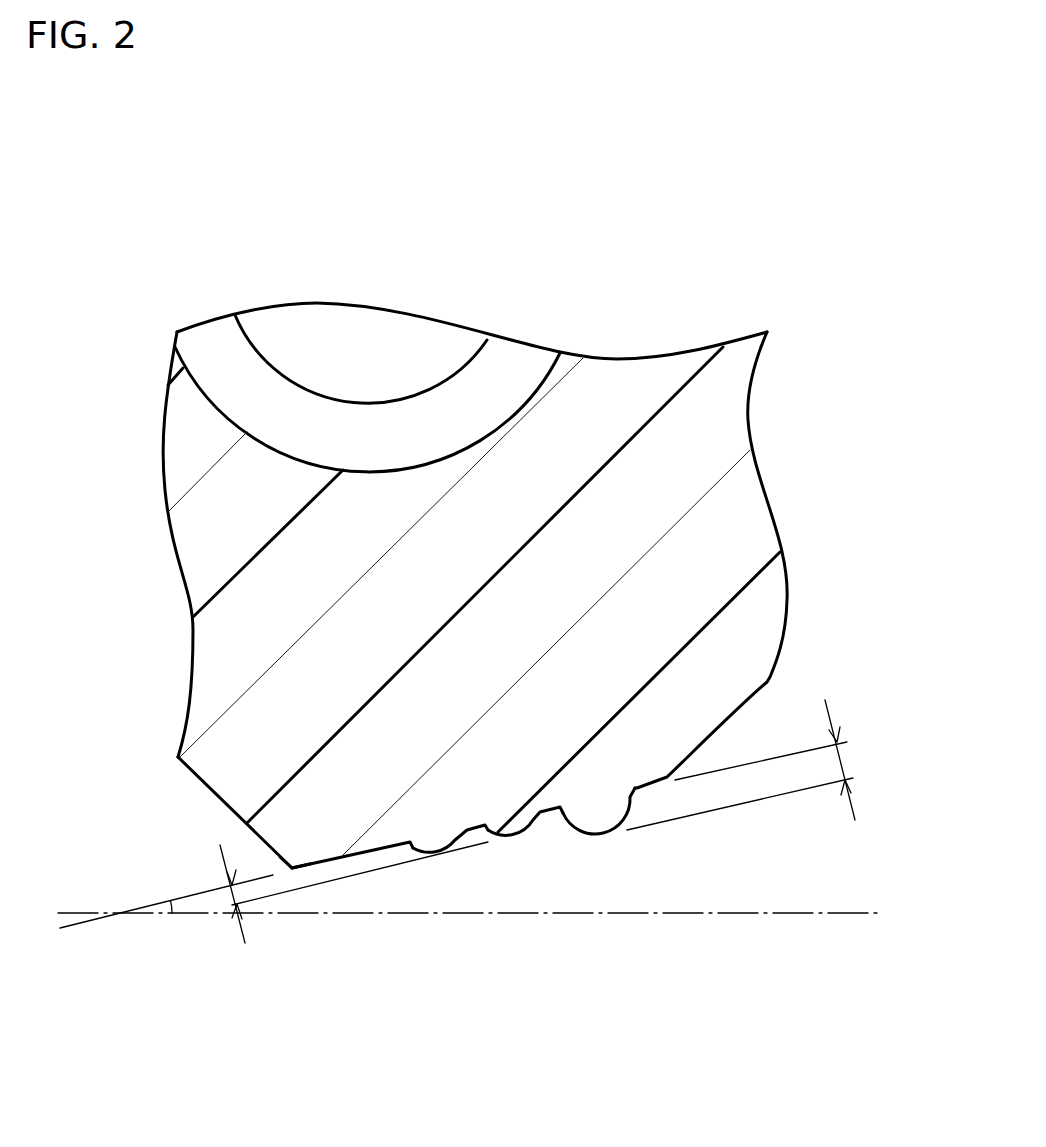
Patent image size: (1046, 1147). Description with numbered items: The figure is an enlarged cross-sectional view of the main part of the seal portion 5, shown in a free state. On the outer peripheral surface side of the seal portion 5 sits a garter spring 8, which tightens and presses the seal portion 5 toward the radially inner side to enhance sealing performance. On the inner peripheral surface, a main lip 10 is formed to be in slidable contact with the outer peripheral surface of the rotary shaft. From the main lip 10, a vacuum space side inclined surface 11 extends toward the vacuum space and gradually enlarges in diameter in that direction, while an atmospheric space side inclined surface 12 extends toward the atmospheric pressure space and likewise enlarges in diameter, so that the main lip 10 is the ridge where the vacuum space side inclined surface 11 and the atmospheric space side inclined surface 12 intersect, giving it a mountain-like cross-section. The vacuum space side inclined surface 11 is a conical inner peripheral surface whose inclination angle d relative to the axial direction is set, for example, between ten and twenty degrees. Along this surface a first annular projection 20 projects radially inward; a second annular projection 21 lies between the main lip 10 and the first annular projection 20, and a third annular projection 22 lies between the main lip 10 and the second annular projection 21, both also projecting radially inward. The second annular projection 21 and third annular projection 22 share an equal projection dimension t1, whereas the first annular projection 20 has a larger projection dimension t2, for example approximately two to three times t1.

The seal portion 5 is at (632, 359).
The garter spring 8 is at (258, 387).
The main lip 10 is at (293, 872).
The vacuum space side inclined surface 11 is at (363, 857).
The atmospheric space side inclined surface 12 is at (207, 790).
The first annular projection 20 is at (602, 818).
The second annular projection 21 is at (517, 823).
The third annular projection 22 is at (442, 843).
The projection dimension t1 is at (274, 886).
The projection dimension t2 is at (754, 765).
The inclination angle d is at (175, 903).